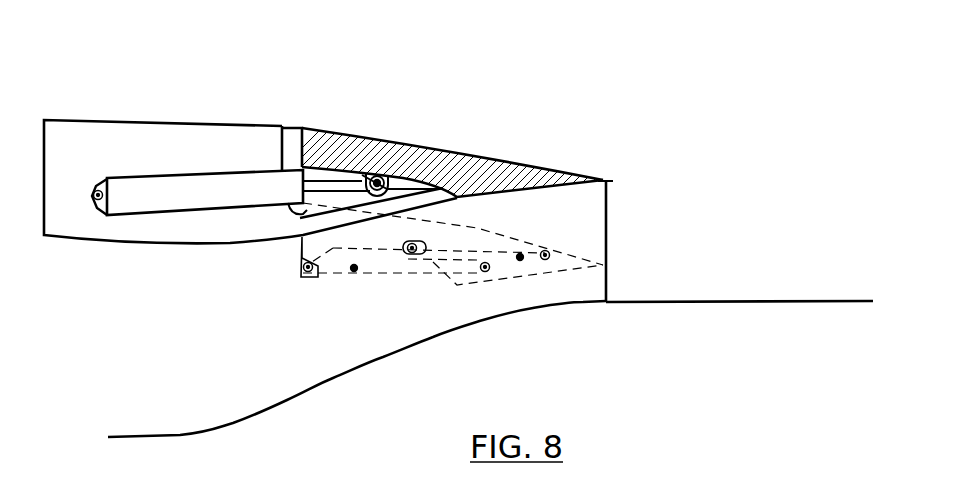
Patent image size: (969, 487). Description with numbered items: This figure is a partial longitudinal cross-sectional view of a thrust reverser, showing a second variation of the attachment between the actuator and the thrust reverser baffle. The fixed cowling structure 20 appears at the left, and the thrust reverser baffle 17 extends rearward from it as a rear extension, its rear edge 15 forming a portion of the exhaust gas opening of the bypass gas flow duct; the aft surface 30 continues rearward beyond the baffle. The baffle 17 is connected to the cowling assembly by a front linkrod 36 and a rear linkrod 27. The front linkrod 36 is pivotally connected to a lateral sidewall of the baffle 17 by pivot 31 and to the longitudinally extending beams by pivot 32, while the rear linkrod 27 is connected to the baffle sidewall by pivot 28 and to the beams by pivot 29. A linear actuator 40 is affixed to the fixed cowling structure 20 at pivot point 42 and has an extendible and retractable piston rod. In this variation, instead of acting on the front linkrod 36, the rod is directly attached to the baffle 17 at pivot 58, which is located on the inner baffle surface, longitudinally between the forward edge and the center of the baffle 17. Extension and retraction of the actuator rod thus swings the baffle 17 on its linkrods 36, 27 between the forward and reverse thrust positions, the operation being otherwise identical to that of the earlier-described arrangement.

The rear edge 15 is at (323, 369).
The thrust reverser baffle 17 is at (448, 158).
The fixed cowling structure 20 is at (110, 165).
The rear linkrod 27 is at (520, 259).
The pivot 28 is at (409, 252).
The pivot 29 is at (546, 252).
The aft nozzle surface 30 is at (767, 320).
The pivot 31 is at (308, 273).
The pivot 32 is at (485, 271).
The front linkrod 36 is at (354, 270).
The linear actuator 40 is at (247, 197).
The pivot point 42 is at (98, 200).
The pivot 58 is at (377, 176).